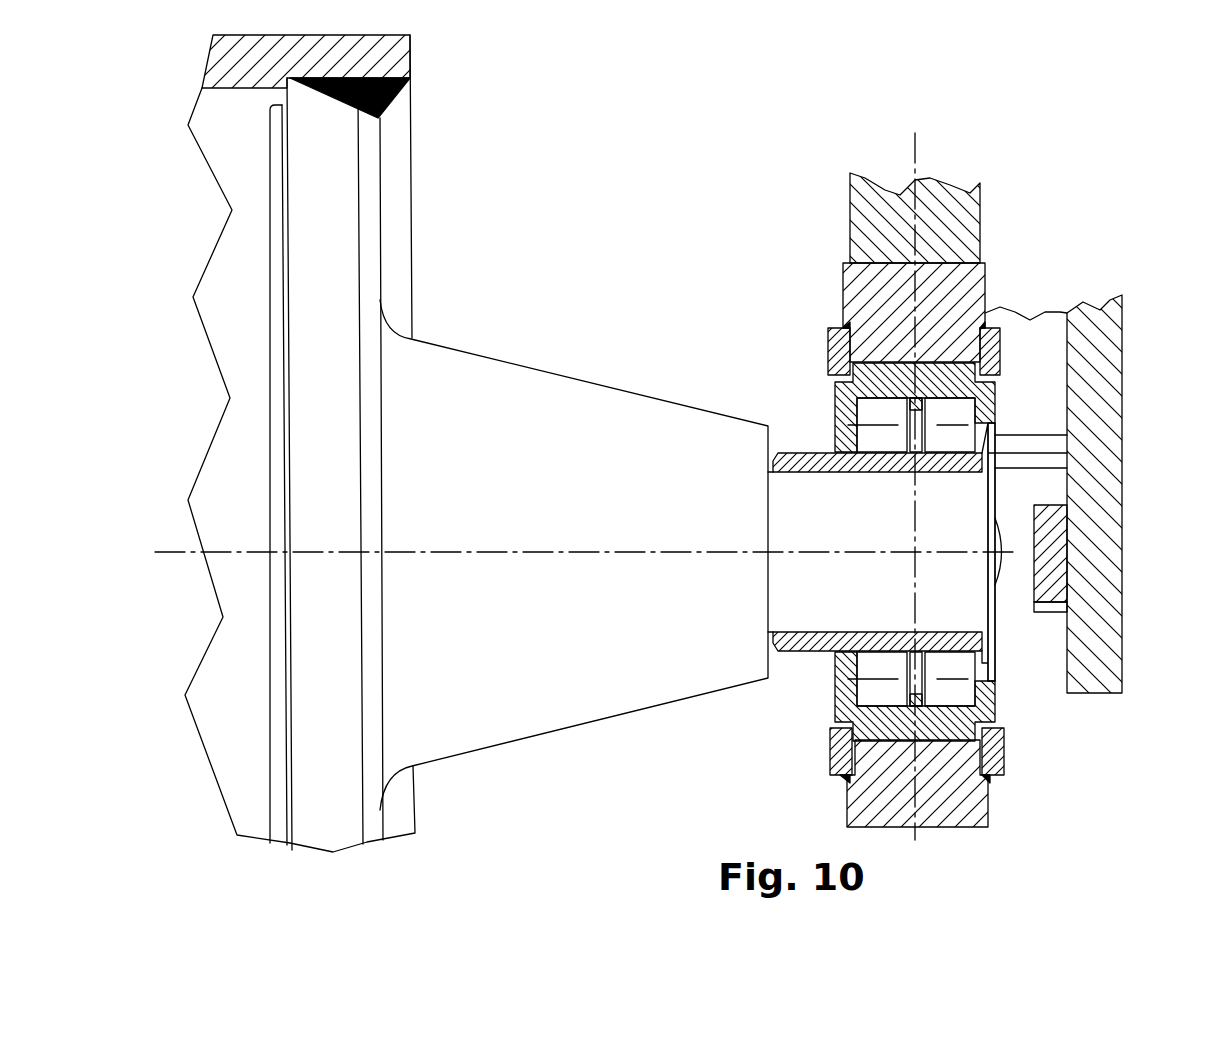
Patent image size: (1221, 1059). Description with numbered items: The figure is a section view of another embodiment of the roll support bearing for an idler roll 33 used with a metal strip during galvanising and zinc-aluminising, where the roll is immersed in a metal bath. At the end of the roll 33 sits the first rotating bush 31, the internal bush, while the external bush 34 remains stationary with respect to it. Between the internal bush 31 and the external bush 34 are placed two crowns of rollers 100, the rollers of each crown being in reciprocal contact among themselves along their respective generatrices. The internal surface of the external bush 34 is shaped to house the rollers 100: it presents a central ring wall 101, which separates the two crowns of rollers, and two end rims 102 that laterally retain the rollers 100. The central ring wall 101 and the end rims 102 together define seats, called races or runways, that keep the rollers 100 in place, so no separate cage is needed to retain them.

The rotating bush 31 is at (787, 653).
The idler roll 33 is at (593, 678).
The external bush 34 is at (885, 372).
The rollers 100 is at (867, 687).
The central ring wall 101 is at (917, 413).
The end rims 102 is at (985, 417).